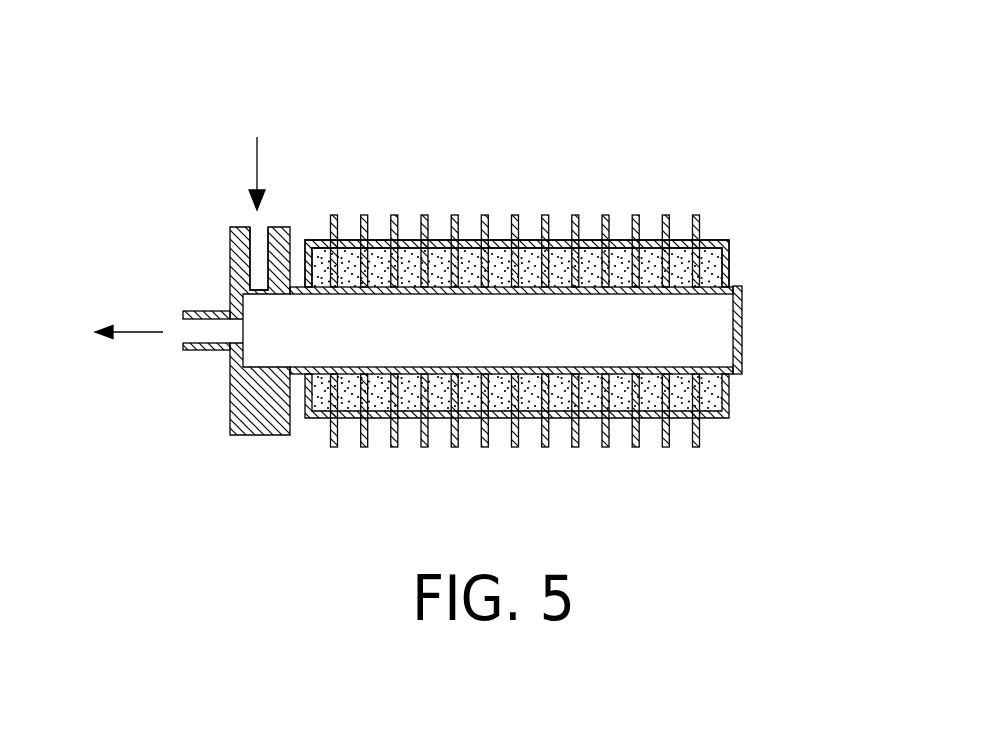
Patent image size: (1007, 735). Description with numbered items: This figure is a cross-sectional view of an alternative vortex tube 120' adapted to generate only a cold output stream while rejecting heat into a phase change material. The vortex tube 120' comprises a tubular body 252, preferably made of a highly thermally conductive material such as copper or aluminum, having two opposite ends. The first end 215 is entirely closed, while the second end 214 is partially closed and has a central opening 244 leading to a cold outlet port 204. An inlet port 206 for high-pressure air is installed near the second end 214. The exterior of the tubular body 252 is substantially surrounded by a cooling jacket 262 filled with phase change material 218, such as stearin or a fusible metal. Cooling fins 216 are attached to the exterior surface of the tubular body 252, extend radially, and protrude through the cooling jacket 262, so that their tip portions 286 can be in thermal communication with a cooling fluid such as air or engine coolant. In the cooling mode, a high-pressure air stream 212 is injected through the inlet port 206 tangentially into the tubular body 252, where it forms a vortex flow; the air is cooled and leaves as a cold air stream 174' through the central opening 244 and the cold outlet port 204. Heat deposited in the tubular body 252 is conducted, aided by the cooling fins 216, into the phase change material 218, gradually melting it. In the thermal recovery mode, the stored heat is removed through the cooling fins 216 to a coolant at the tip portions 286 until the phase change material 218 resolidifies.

The vortex tube 120' is at (465, 281).
The cold air stream 174' is at (123, 289).
The cold outlet port 204 is at (182, 337).
The inlet port 206 is at (262, 227).
The high-pressure air stream 212 is at (253, 182).
The second end 214 is at (260, 330).
The first end 215 is at (713, 343).
The cooling fins 216 is at (725, 393).
The phase change material 218 is at (498, 240).
The central opening 244 is at (237, 335).
The tubular body 252 is at (653, 293).
The cooling jacket 262 is at (712, 240).
The tip portions 286 is at (703, 433).